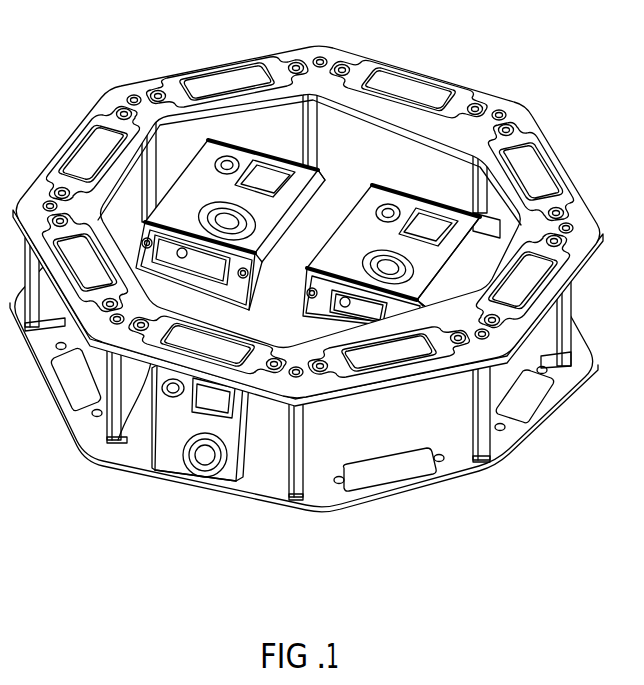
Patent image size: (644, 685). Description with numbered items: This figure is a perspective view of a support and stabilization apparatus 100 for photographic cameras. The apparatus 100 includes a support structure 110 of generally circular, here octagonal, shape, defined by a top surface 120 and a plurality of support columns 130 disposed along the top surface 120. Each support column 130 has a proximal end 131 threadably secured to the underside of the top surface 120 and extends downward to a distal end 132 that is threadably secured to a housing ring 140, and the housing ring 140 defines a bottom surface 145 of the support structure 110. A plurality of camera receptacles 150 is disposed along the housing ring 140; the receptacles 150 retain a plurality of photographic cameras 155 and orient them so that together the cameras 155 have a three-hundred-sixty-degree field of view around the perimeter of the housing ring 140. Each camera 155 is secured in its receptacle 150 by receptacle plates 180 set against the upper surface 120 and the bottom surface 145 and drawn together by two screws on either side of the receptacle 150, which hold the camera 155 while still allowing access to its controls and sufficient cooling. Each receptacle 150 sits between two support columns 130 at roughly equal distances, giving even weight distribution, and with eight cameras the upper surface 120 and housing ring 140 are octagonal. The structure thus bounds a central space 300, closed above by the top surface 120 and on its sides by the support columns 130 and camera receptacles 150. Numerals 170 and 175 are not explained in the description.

The support and stabilization apparatus 100 is at (521, 64).
The support structure 110 is at (313, 226).
The top surface 120 is at (512, 112).
The support columns 130 is at (492, 440).
The proximal end 131 is at (568, 230).
The distal end 132 is at (540, 352).
The housing ring 140 is at (270, 487).
The bottom surface 145 is at (163, 482).
The camera receptacles 150 is at (170, 457).
The photographic cameras 155 is at (152, 433).
The cable bracket 170 is at (160, 362).
The camera lens 175 is at (215, 484).
The receptacle plates 180 is at (512, 128).
The central space 300 is at (519, 387).